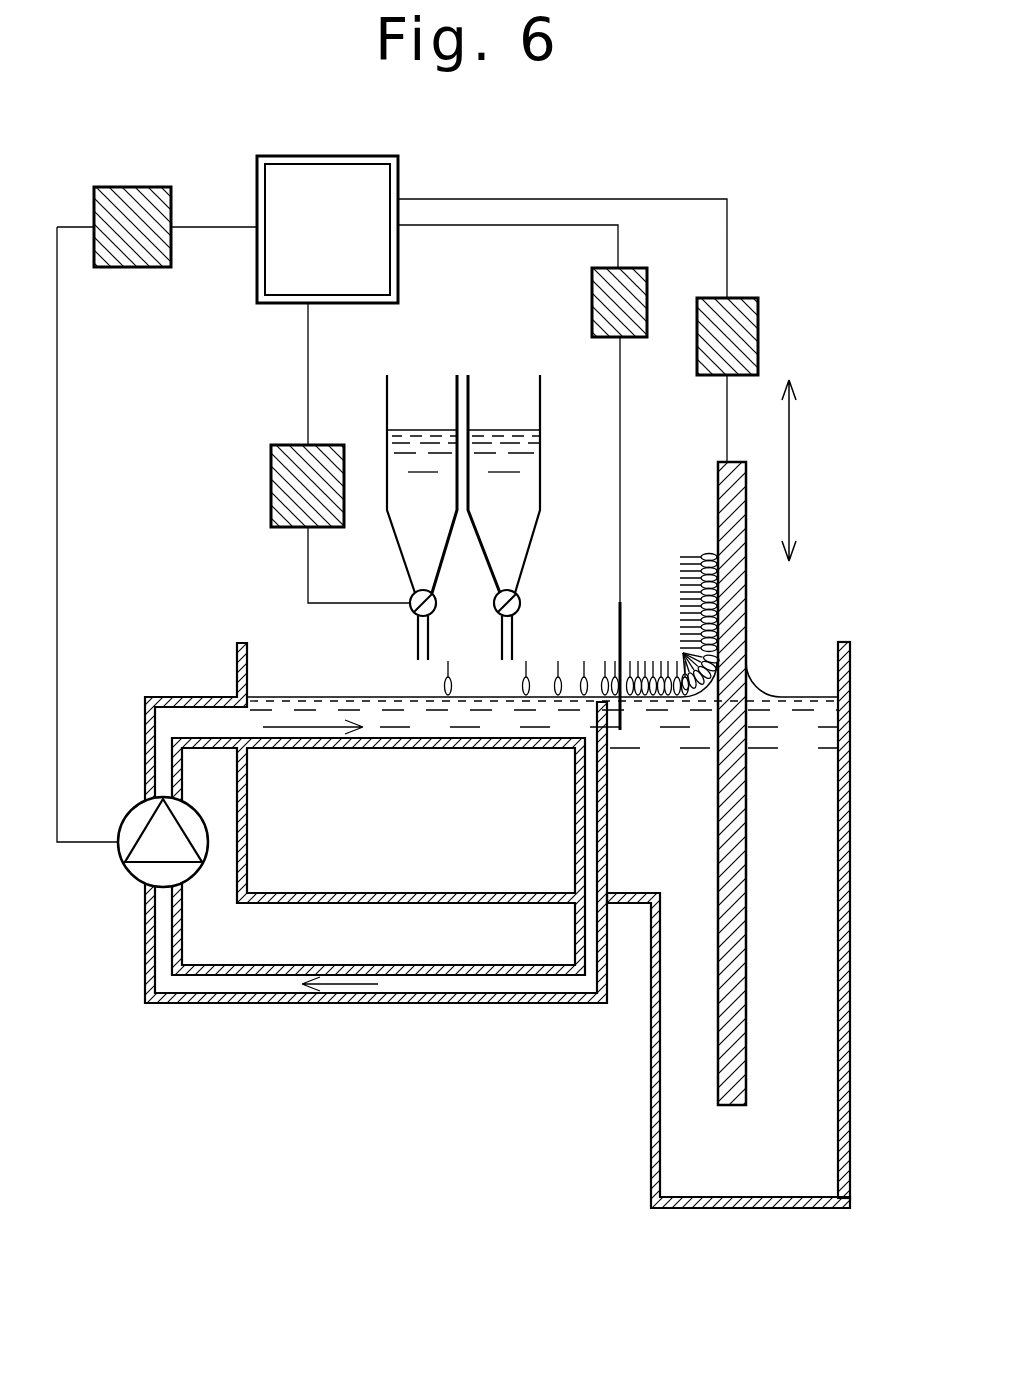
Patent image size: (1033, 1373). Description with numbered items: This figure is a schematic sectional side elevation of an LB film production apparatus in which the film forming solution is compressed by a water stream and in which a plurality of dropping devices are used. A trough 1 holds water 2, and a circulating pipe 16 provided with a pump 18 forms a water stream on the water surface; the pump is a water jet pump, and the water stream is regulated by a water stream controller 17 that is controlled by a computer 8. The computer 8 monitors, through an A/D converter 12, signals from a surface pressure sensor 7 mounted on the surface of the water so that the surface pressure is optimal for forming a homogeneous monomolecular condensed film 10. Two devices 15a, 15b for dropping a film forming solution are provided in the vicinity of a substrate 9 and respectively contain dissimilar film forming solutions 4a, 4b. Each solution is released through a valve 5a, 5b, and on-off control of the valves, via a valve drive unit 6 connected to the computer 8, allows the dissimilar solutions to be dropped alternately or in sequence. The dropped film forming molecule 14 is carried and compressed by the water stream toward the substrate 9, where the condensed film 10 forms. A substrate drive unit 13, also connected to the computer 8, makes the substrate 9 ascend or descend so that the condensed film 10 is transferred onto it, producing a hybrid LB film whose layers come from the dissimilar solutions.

The trough 1 is at (655, 1103).
The water 2 is at (812, 927).
The film forming solution 4a is at (430, 440).
The film forming solution 4b is at (508, 445).
The valve 5a is at (412, 616).
The valve 5b is at (497, 616).
The valve drive unit 6 is at (280, 473).
The surface pressure sensor 7 is at (627, 625).
The computer 8 is at (375, 186).
The substrate 9 is at (738, 628).
The condensed film 10 is at (657, 645).
The A/D converter 12 is at (636, 292).
The substrate drive unit 13 is at (745, 322).
The film forming molecule 14 is at (533, 660).
The device for dropping a film forming solution 15a is at (386, 400).
The device for dropping a film forming solution 15b is at (541, 400).
The circulating pipe 16 is at (510, 998).
The water stream controller 17 is at (157, 210).
The pump 18 is at (130, 875).